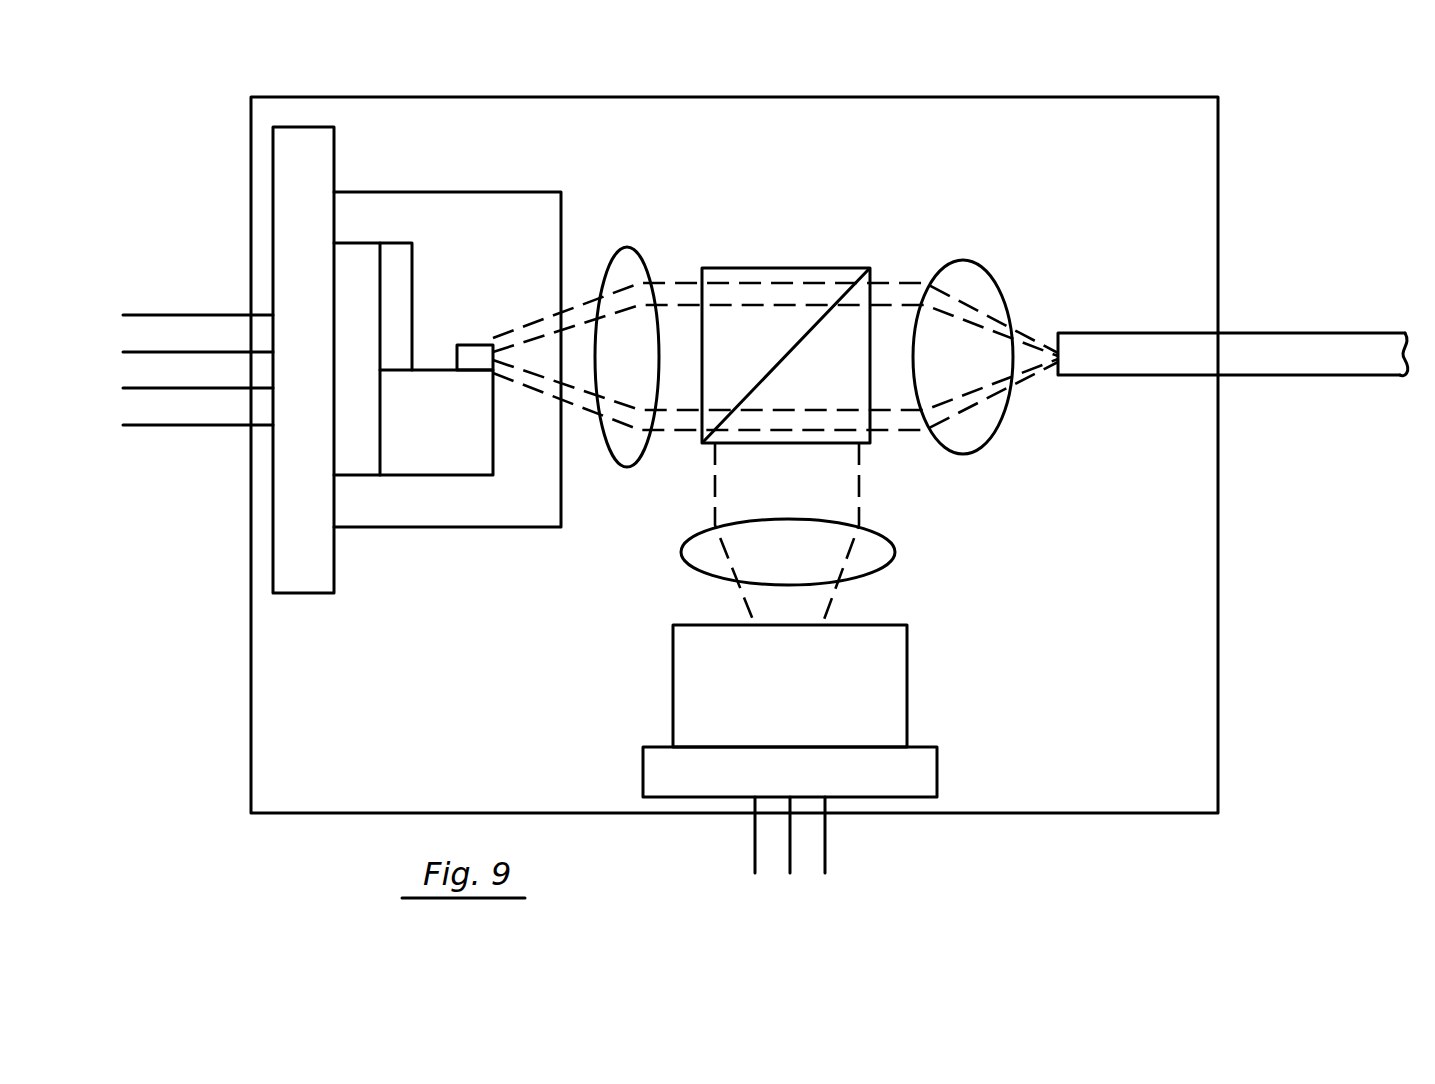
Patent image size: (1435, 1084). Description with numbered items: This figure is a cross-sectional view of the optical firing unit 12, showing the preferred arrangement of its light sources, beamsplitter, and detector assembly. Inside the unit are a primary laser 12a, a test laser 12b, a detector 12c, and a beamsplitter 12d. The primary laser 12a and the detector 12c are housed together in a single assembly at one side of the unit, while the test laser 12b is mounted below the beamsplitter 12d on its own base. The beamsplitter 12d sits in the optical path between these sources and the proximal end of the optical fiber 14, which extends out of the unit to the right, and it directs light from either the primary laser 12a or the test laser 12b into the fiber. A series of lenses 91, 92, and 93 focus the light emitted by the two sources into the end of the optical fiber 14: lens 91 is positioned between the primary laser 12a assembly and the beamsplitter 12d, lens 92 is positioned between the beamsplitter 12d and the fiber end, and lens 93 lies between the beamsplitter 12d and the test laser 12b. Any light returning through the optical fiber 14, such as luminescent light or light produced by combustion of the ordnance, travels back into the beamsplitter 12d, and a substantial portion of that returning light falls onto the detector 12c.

The optical firing unit 12 is at (820, 90).
The primary laser 12a is at (470, 356).
The test laser 12b is at (907, 677).
The detector 12c is at (412, 280).
The beamsplitter 12d is at (775, 268).
The optical fiber 14 is at (1275, 333).
The lens 91 is at (640, 255).
The lens 92 is at (975, 262).
The lens 93 is at (890, 540).